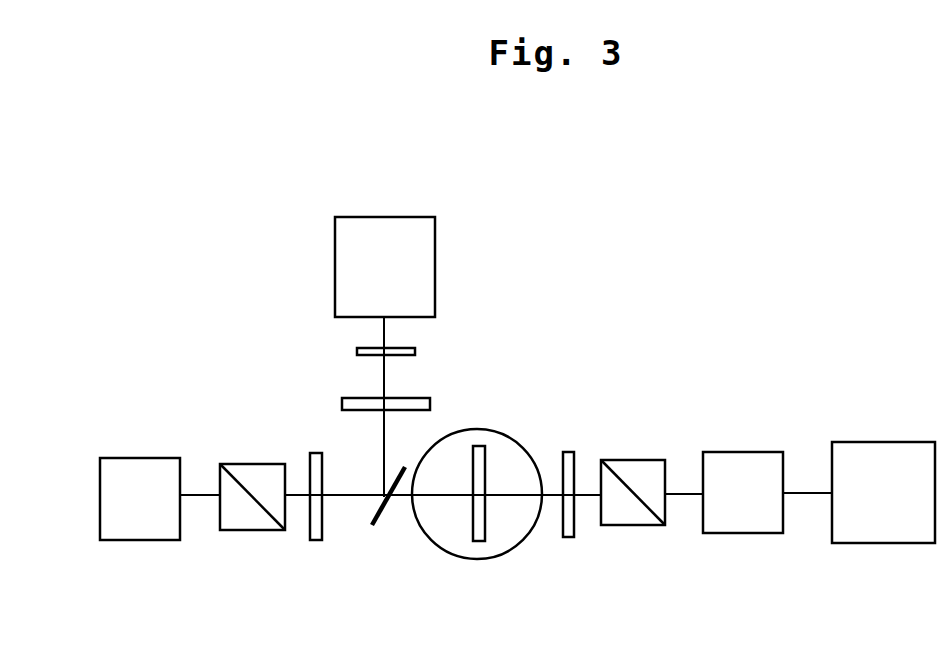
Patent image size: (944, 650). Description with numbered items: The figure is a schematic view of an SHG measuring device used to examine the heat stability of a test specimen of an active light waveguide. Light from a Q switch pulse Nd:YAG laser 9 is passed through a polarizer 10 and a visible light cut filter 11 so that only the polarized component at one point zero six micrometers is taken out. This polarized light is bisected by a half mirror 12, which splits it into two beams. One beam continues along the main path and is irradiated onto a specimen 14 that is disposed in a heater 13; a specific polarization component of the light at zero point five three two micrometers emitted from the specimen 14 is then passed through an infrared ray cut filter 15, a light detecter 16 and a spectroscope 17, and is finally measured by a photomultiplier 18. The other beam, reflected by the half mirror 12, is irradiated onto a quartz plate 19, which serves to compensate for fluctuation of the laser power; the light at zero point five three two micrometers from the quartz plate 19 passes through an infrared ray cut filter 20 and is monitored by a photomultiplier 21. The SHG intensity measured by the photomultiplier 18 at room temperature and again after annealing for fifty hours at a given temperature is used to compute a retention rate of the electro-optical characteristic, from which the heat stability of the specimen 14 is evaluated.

The Q switch pulse Nd:YAG laser 9 is at (140, 499).
The polarizer 10 is at (243, 510).
The visible light cut filter 11 is at (320, 518).
The half mirror 12 is at (396, 509).
The heater 13 is at (462, 538).
The specimen 14 is at (480, 515).
The infrared ray cut filter 15 is at (565, 468).
The light detecter 16 is at (643, 475).
The spectroscope 17 is at (743, 492).
The photomultiplier 18 is at (883, 492).
The quartz plate 19 is at (363, 403).
The infrared ray cut filter 20 is at (412, 350).
The photomultiplier 21 is at (385, 267).